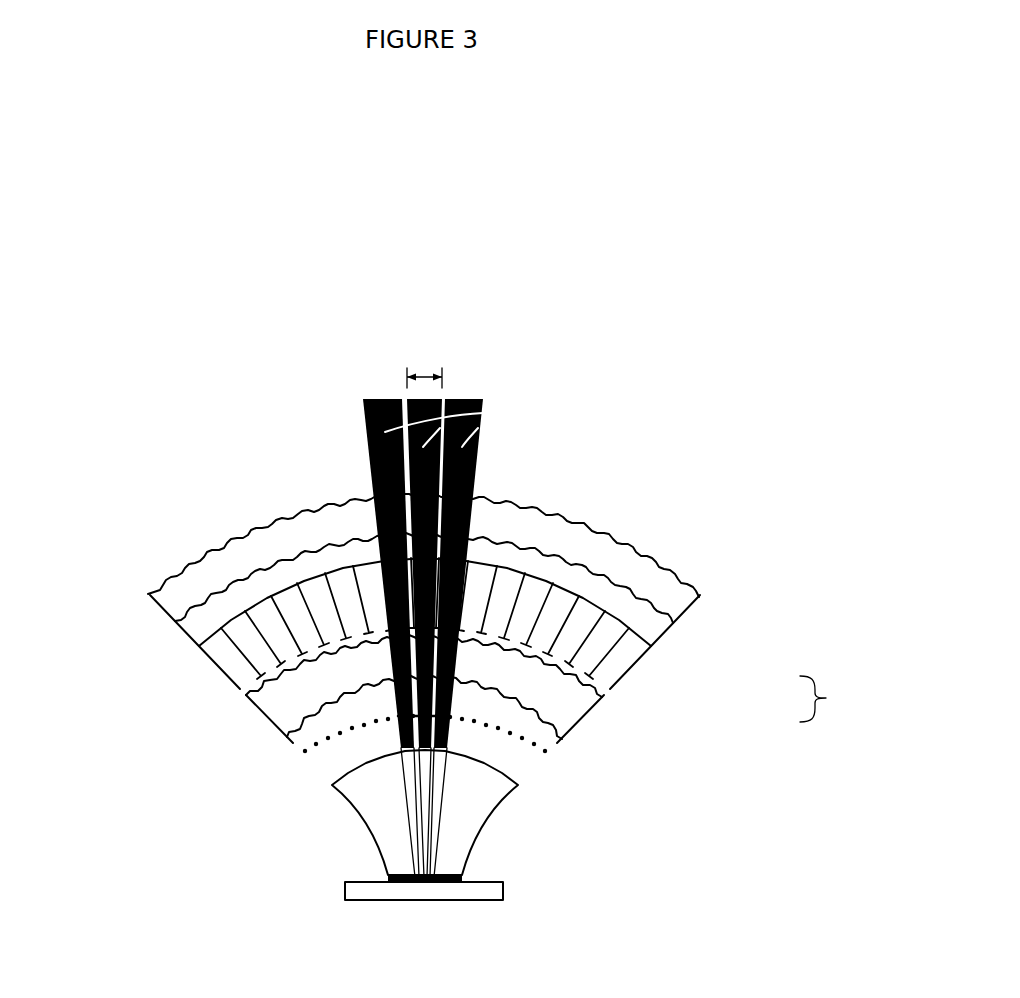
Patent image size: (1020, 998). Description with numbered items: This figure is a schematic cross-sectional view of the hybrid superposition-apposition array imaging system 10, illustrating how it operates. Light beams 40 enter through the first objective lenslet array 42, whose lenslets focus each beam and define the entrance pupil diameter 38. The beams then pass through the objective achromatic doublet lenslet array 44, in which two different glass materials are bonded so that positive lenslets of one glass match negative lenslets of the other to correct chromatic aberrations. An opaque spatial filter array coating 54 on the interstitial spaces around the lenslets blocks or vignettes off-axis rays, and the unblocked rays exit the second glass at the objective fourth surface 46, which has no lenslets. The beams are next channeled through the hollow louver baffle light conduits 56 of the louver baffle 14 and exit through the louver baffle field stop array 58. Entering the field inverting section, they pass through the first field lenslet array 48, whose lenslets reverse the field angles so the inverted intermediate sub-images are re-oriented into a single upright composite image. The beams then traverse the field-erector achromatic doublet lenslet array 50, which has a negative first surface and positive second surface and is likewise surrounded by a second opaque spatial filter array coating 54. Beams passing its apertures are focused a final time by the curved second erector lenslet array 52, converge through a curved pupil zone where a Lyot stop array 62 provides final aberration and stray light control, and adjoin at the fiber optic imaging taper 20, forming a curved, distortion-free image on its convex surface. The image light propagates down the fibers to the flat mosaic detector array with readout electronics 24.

The hybrid superposition-apposition array imaging system 10 is at (742, 473).
The louver baffle 14 is at (833, 699).
The fiber optic imaging taper 20 is at (388, 832).
The flat mosaic detector array with readout electronics 24 is at (462, 877).
The entrance pupil diameter 38 is at (423, 371).
The light beams 40 is at (486, 416).
The first objective lenslet array 42 is at (152, 585).
The objective achromatic doublet lenslet array 44 is at (190, 612).
The objective fourth surface 46 is at (200, 632).
The first field lenslet array 48 is at (253, 693).
The field-erector achromatic doublet lenslet array 50 is at (293, 722).
The second erector lenslet array 52 is at (300, 768).
The opaque spatial filter array coating 54 is at (650, 604).
The hollow louver baffle light conduits 56 is at (622, 660).
The louver baffle field stop array 58 is at (600, 684).
The Lyot stop array 62 is at (540, 776).